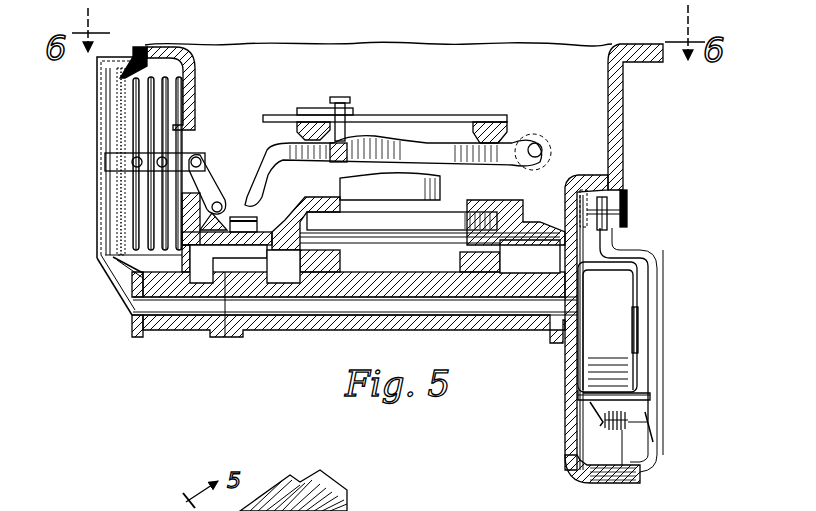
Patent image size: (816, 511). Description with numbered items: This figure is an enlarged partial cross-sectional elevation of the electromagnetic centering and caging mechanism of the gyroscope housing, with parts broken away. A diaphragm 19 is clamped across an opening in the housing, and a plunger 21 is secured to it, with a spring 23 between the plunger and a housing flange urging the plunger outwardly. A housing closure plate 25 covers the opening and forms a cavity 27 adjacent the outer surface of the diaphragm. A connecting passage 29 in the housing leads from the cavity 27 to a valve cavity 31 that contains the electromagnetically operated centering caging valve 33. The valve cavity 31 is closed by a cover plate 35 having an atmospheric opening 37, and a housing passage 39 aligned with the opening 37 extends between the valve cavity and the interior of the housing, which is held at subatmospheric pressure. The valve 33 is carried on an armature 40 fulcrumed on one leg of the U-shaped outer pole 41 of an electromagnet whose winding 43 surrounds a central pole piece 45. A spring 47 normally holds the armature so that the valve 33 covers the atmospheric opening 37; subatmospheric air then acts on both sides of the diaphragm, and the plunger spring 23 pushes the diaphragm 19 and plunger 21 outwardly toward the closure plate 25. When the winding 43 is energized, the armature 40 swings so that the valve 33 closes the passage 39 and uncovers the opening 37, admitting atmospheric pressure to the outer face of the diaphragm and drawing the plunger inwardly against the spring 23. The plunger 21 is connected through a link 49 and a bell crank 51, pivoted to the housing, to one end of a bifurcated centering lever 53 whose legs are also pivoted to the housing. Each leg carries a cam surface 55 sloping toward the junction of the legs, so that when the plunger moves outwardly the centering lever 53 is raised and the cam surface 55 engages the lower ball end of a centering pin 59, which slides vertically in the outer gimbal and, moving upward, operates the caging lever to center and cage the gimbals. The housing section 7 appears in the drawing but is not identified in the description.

The housing wall 7 is at (623, 128).
The diaphragm 19 is at (120, 100).
The plunger 21 is at (127, 260).
The spring 23 is at (172, 78).
The housing closure plate 25 is at (97, 197).
The cavity 27 is at (127, 287).
The connecting passage 29 is at (200, 310).
The valve cavity 31 is at (593, 448).
The centering caging valve 33 is at (628, 200).
The cover plate 35 is at (665, 437).
The atmospheric opening 37 is at (627, 212).
The housing passage 39 is at (565, 213).
The armature 40 is at (643, 310).
The U-shaped outer pole 41 is at (578, 373).
The winding 43 is at (627, 370).
The central pole piece 45 is at (638, 347).
The spring 47 is at (610, 423).
The link 49 is at (195, 153).
The bell crank 51 is at (260, 197).
The bifurcated centering lever 53 is at (467, 165).
The cam surface 55 is at (350, 143).
The centering pin 59 is at (335, 97).